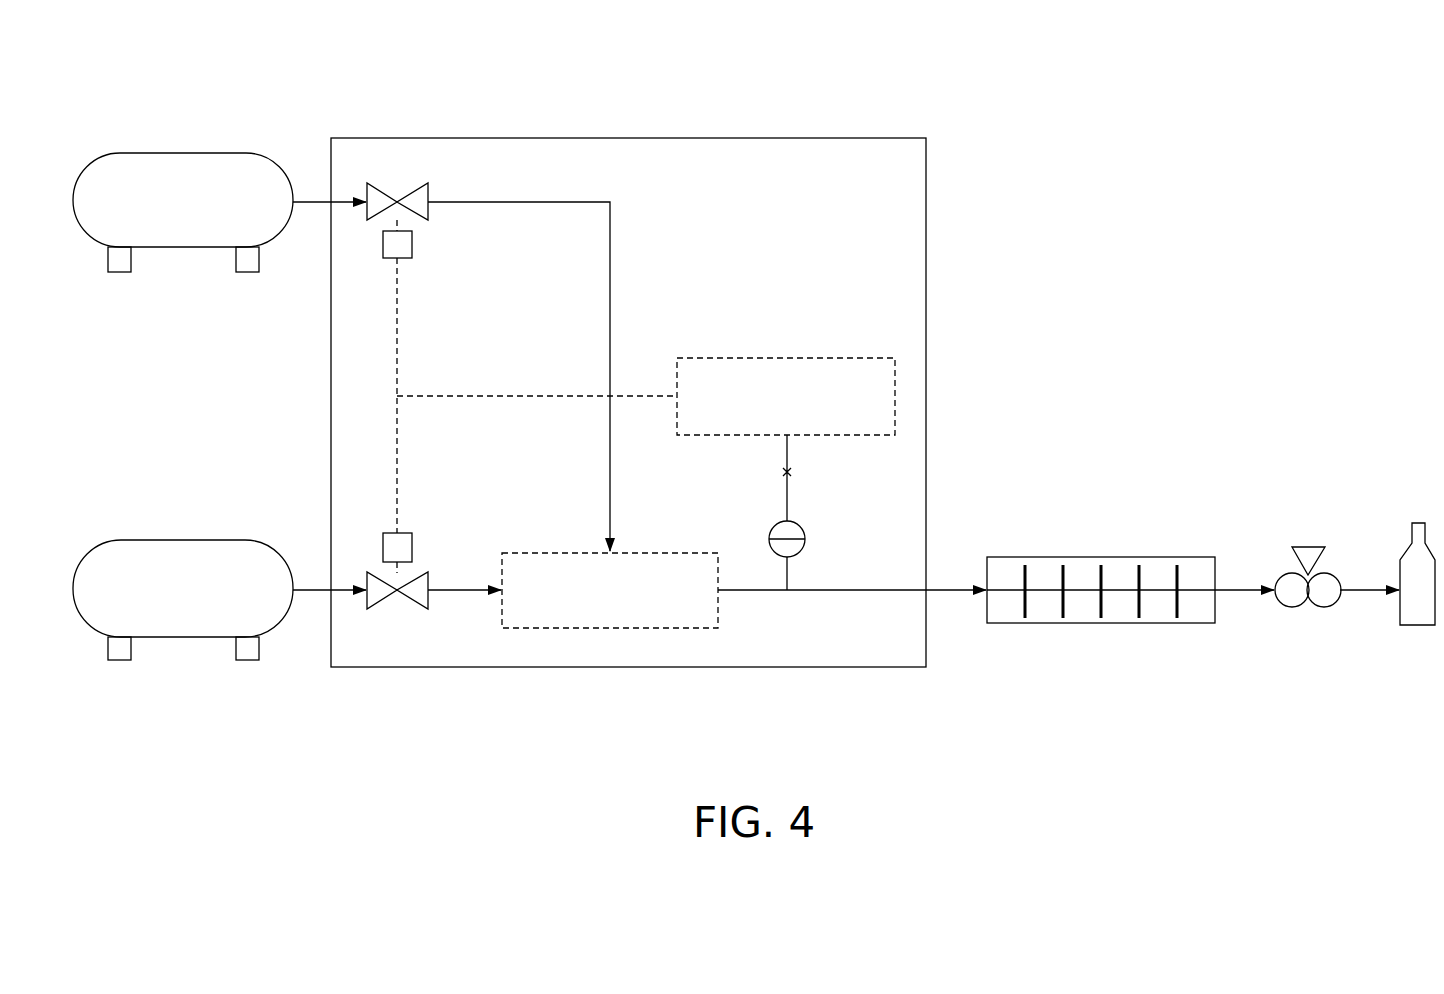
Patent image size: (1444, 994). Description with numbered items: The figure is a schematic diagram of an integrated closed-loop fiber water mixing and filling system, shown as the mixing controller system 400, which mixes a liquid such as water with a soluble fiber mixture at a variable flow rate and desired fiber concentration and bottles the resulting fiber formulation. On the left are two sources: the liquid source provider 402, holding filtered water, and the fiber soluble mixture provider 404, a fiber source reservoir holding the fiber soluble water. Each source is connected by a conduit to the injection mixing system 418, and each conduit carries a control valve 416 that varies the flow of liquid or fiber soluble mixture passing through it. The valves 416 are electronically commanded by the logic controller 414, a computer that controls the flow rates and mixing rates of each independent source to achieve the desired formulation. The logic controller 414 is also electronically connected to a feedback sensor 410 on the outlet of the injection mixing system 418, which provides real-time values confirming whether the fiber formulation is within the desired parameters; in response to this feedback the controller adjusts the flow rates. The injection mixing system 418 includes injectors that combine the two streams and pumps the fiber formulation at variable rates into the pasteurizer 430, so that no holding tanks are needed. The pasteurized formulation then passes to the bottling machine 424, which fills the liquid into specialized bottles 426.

The mixing controller system 400 is at (1188, 152).
The liquid source provider 402 is at (150, 522).
The fiber soluble mixture provider 404 is at (150, 132).
The feedback sensor 410 is at (814, 523).
The logic controller 414 is at (749, 335).
The control valve 416 is at (395, 172).
The injection mixing system 418 is at (568, 645).
The bottling machine 424 is at (1311, 535).
The bottle 426 is at (1413, 637).
The pasteurizer 430 is at (1103, 548).